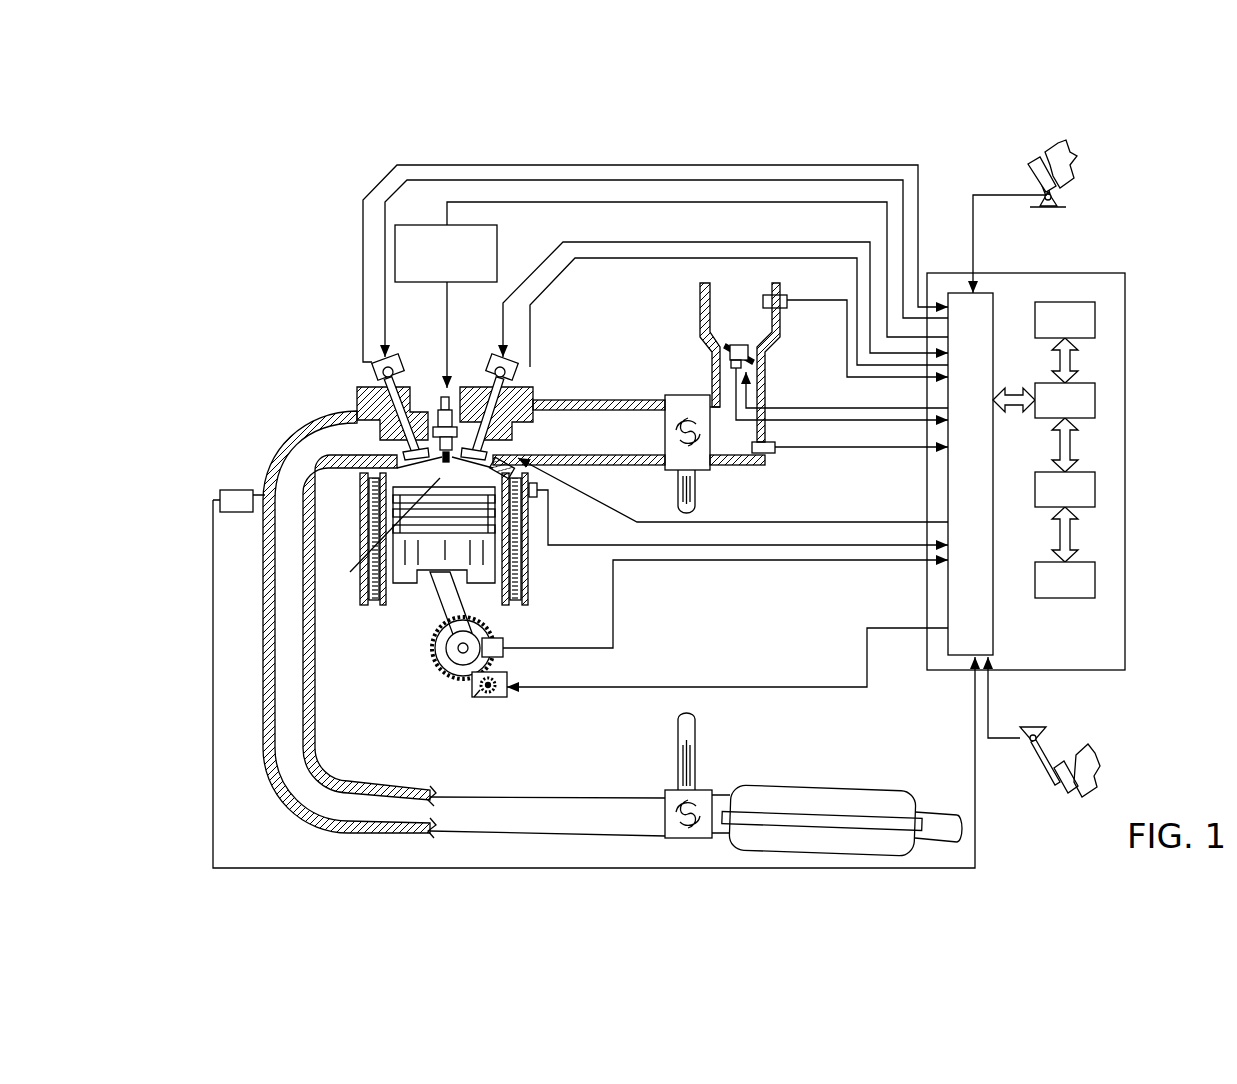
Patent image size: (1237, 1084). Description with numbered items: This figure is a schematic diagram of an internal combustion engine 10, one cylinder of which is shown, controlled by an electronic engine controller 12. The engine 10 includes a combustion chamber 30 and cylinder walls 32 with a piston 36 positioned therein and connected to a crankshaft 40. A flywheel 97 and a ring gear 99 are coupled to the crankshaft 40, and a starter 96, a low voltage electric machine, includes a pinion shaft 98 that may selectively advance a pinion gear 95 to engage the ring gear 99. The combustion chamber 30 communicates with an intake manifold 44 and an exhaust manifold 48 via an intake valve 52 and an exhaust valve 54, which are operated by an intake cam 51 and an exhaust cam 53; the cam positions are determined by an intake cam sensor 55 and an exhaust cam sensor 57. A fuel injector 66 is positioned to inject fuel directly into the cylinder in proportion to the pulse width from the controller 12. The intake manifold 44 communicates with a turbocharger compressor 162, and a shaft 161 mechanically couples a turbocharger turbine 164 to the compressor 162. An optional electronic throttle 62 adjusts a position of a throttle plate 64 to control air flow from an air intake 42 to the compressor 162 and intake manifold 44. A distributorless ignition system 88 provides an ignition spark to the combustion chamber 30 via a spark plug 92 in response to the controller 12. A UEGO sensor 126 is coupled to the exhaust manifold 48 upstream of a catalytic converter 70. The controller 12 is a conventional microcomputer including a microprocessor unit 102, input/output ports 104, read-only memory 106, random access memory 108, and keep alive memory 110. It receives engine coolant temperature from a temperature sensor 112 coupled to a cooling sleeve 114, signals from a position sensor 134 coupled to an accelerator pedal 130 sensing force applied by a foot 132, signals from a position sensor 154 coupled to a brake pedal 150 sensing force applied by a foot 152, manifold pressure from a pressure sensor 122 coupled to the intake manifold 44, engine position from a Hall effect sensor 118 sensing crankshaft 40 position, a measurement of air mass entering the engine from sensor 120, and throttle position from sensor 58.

The internal combustion engine 10 is at (300, 350).
The electronic engine controller 12 is at (1117, 273).
The combustion chamber 30 is at (382, 535).
The cylinder walls 32 is at (395, 593).
The piston 36 is at (430, 560).
The crankshaft 40 is at (455, 668).
The air intake 42 is at (726, 324).
The intake manifold 44 is at (588, 444).
The exhaust manifold 48 is at (318, 451).
The intake cam 51 is at (500, 358).
The intake valve 52 is at (475, 445).
The exhaust cam 53 is at (383, 360).
The exhaust valve 54 is at (360, 422).
The intake cam sensor 55 is at (512, 377).
The exhaust cam sensor 57 is at (372, 377).
The throttle position sensor 58 is at (731, 366).
The electronic throttle 62 is at (752, 354).
The throttle plate 64 is at (729, 350).
The fuel injector 66 is at (545, 482).
The catalytic converter 70 is at (765, 790).
The distributorless ignition system 88 is at (404, 225).
The spark plug 92 is at (450, 392).
The pinion gear 95 is at (490, 698).
The starter 96 is at (507, 696).
The flywheel 97 is at (437, 660).
The pinion shaft 98 is at (473, 698).
The ring gear 99 is at (462, 686).
The microprocessor unit 102 is at (1097, 398).
The input/output ports 104 is at (993, 298).
The read-only memory 106 is at (1097, 318).
The random access memory 108 is at (1097, 487).
The keep alive memory 110 is at (1097, 577).
The temperature sensor 112 is at (738, 514).
The cooling sleeve 114 is at (520, 563).
The Hall effect sensor 118 is at (503, 640).
The air mass sensor 120 is at (778, 293).
The pressure sensor 122 is at (772, 455).
The Universal Exhaust Gas Oxygen (UEGO) sensor 126 is at (220, 492).
The accelerator pedal 130 is at (1032, 172).
The foot 132 is at (1073, 162).
The position sensor 134 is at (1057, 197).
The brake pedal 150 is at (1056, 780).
The foot 152 is at (1085, 755).
The position sensor 154 is at (1022, 737).
The shaft 161 is at (677, 482).
The turbocharger compressor 162 is at (665, 395).
The turbocharger turbine 164 is at (667, 790).